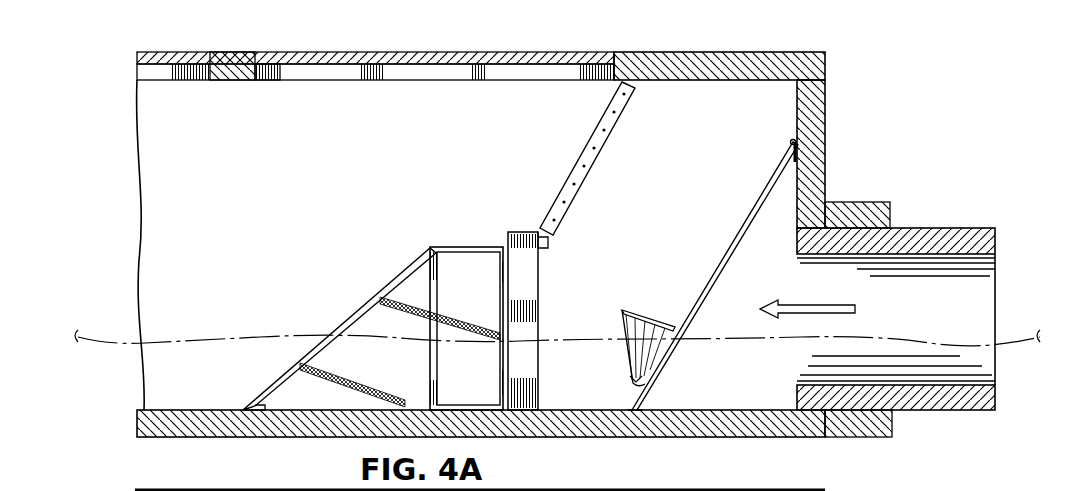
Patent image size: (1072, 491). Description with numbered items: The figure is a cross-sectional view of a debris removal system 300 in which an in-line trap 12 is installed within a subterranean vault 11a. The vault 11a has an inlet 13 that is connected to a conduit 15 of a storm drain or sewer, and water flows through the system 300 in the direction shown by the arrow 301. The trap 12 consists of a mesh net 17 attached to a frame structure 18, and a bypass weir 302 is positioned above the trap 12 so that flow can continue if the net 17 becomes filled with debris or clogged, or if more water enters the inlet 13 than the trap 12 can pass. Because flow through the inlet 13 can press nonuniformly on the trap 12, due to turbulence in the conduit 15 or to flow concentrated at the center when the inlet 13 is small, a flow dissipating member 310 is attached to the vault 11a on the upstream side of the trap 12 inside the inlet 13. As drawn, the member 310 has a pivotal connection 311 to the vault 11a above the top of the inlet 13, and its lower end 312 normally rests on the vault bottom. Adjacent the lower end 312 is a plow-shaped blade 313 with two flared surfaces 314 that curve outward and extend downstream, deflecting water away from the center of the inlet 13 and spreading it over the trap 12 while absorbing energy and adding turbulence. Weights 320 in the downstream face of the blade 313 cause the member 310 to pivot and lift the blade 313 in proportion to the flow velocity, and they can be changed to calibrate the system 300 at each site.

The system 300 is at (557, 244).
The subterranean vault 11a is at (825, 76).
The conduit 15 is at (918, 228).
The inlet 13 is at (822, 298).
The arrow 301 is at (845, 313).
The in-line trap 12 is at (354, 283).
The mesh net 17 is at (397, 382).
The frame structure 18 is at (450, 247).
The bypass weir 302 is at (570, 184).
The flow dissipating member 310 is at (730, 240).
The pivotal connection 311 is at (792, 140).
The lower end 312 is at (646, 410).
The plow-shaped blade 313 is at (616, 320).
The flared surfaces 314 is at (648, 355).
The weights 320 is at (628, 383).